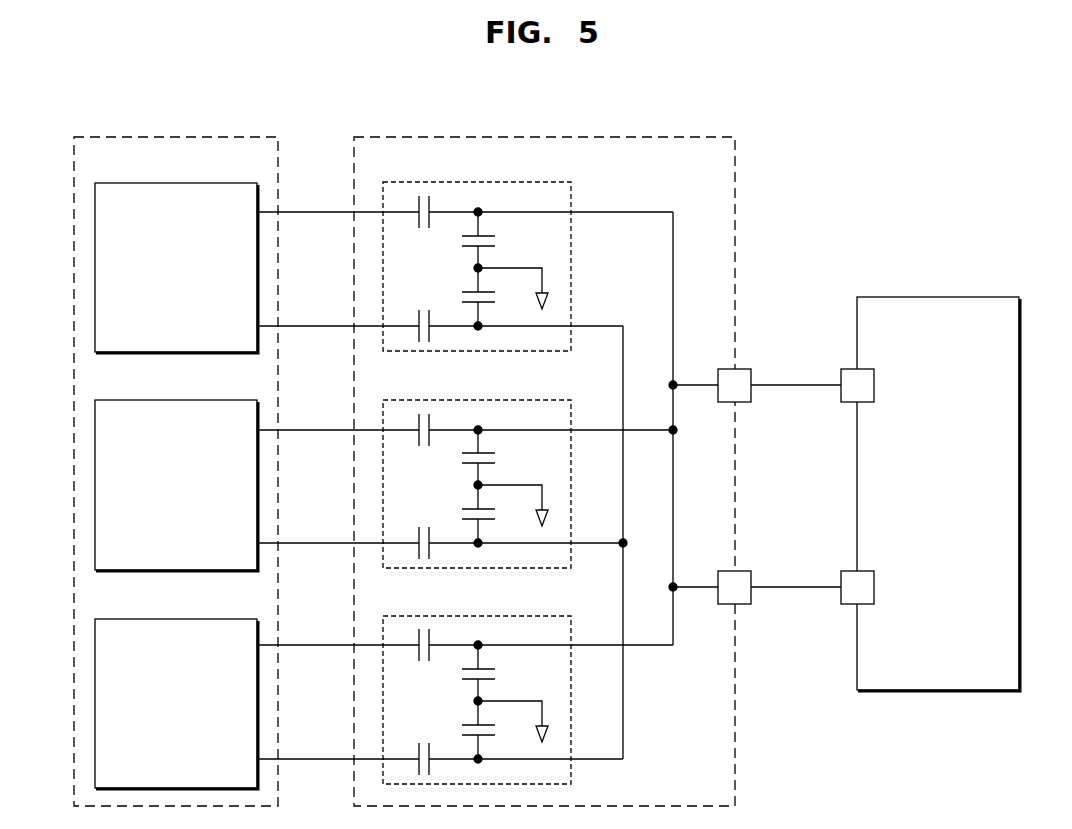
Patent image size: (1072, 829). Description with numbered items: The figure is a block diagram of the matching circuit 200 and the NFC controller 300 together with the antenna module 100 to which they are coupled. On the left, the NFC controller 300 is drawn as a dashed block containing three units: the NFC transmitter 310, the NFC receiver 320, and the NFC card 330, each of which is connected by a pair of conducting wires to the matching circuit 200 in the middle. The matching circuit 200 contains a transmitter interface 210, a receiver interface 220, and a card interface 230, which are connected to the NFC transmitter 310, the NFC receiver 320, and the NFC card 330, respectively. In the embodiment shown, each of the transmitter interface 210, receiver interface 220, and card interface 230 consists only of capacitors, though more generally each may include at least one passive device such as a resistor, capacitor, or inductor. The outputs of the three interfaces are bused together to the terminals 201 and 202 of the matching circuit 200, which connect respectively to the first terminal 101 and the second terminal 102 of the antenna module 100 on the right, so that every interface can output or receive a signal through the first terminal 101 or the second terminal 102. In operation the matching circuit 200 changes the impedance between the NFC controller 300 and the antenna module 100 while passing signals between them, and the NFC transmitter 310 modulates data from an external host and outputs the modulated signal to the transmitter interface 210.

The antenna module 100 is at (961, 294).
The first terminal 101 is at (863, 368).
The second terminal 102 is at (863, 571).
The matching circuit 200 is at (657, 135).
The terminal 201 is at (740, 368).
The terminal 202 is at (740, 571).
The transmitter interface 210 is at (517, 180).
The receiver interface 220 is at (515, 396).
The card interface 230 is at (515, 612).
The NFC controller 300 is at (197, 135).
The NFC transmitter 310 is at (197, 183).
The NFC receiver 320 is at (197, 400).
The NFC card 330 is at (197, 619).